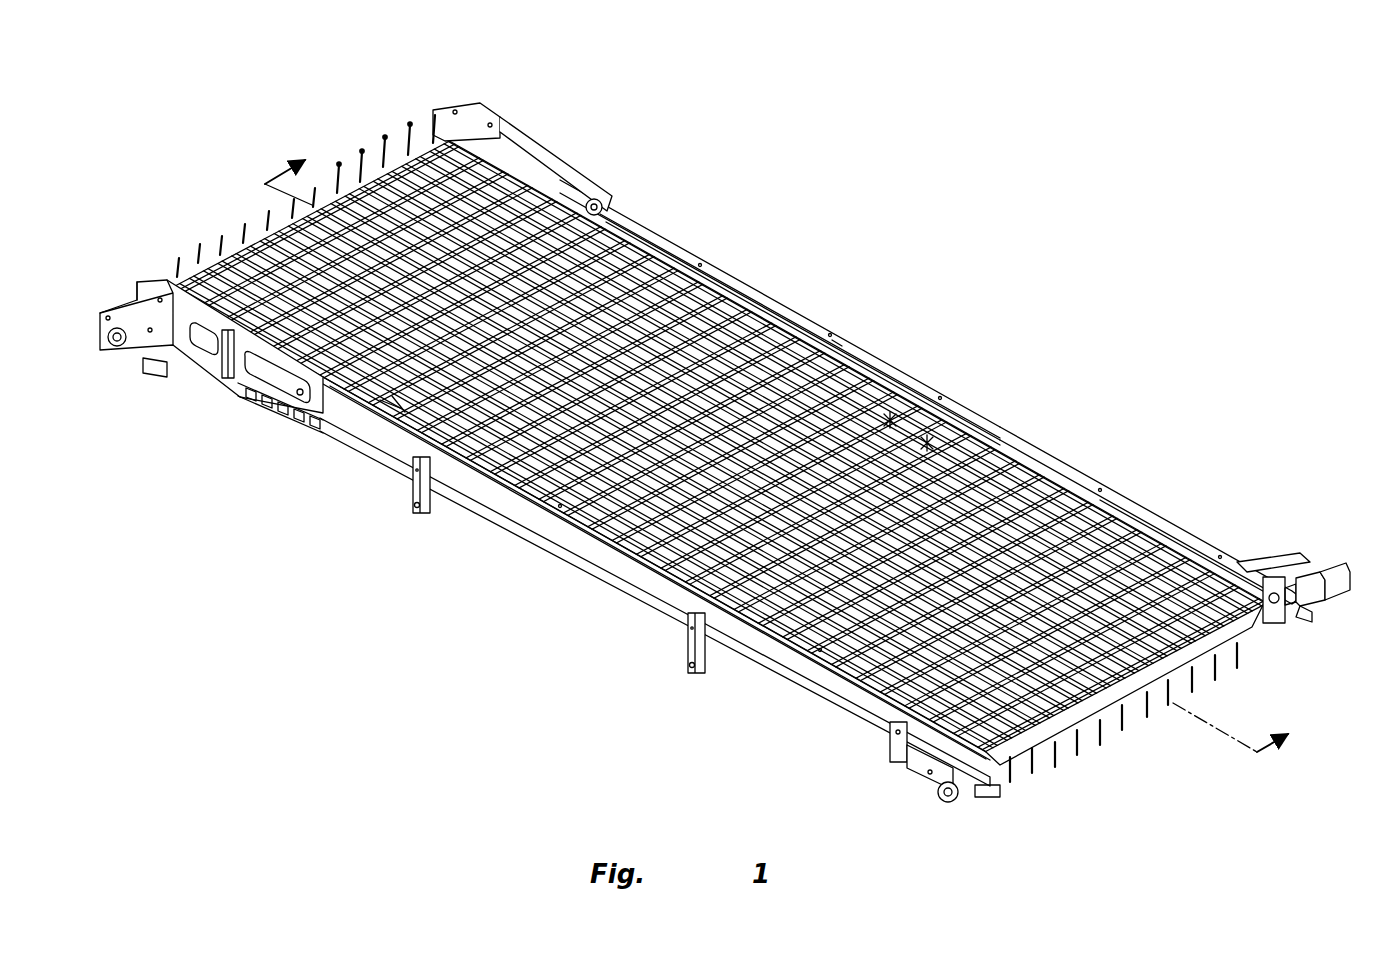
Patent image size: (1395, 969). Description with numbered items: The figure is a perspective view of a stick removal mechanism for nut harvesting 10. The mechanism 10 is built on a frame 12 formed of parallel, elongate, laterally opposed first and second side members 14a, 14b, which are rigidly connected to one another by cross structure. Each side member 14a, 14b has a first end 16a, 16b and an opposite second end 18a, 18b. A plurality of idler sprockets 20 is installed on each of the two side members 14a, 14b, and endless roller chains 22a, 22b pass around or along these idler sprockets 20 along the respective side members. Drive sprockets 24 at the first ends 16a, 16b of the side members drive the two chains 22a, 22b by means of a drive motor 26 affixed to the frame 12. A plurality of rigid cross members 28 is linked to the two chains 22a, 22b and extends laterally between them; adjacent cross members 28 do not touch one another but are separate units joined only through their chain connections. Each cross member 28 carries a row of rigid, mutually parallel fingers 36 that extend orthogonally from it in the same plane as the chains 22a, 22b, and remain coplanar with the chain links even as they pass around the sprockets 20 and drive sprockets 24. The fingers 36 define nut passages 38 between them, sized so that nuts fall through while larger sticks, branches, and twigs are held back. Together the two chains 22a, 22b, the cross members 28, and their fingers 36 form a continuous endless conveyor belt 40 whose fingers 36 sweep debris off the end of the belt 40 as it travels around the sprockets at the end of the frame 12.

The stick removal mechanism for nut harvesting 10 is at (205, 124).
The frame 12 is at (500, 553).
The first side member 14a is at (575, 555).
The second side member 14b is at (790, 292).
The first end of first side member 16a is at (850, 707).
The first end of second side member 16b is at (1182, 540).
The second end of first side member 18a is at (163, 280).
The second end of second side member 18b is at (565, 168).
The idler sprockets 20 is at (450, 535).
The endless roller chain 22a is at (268, 414).
The endless roller chain 22b is at (1130, 522).
The drive sprockets 24 is at (1270, 620).
The drive motor 26 is at (1333, 560).
The cross members 28 is at (670, 255).
The fingers 36 is at (407, 152).
The nut passages 38 is at (256, 220).
The conveyor belt 40 is at (838, 345).